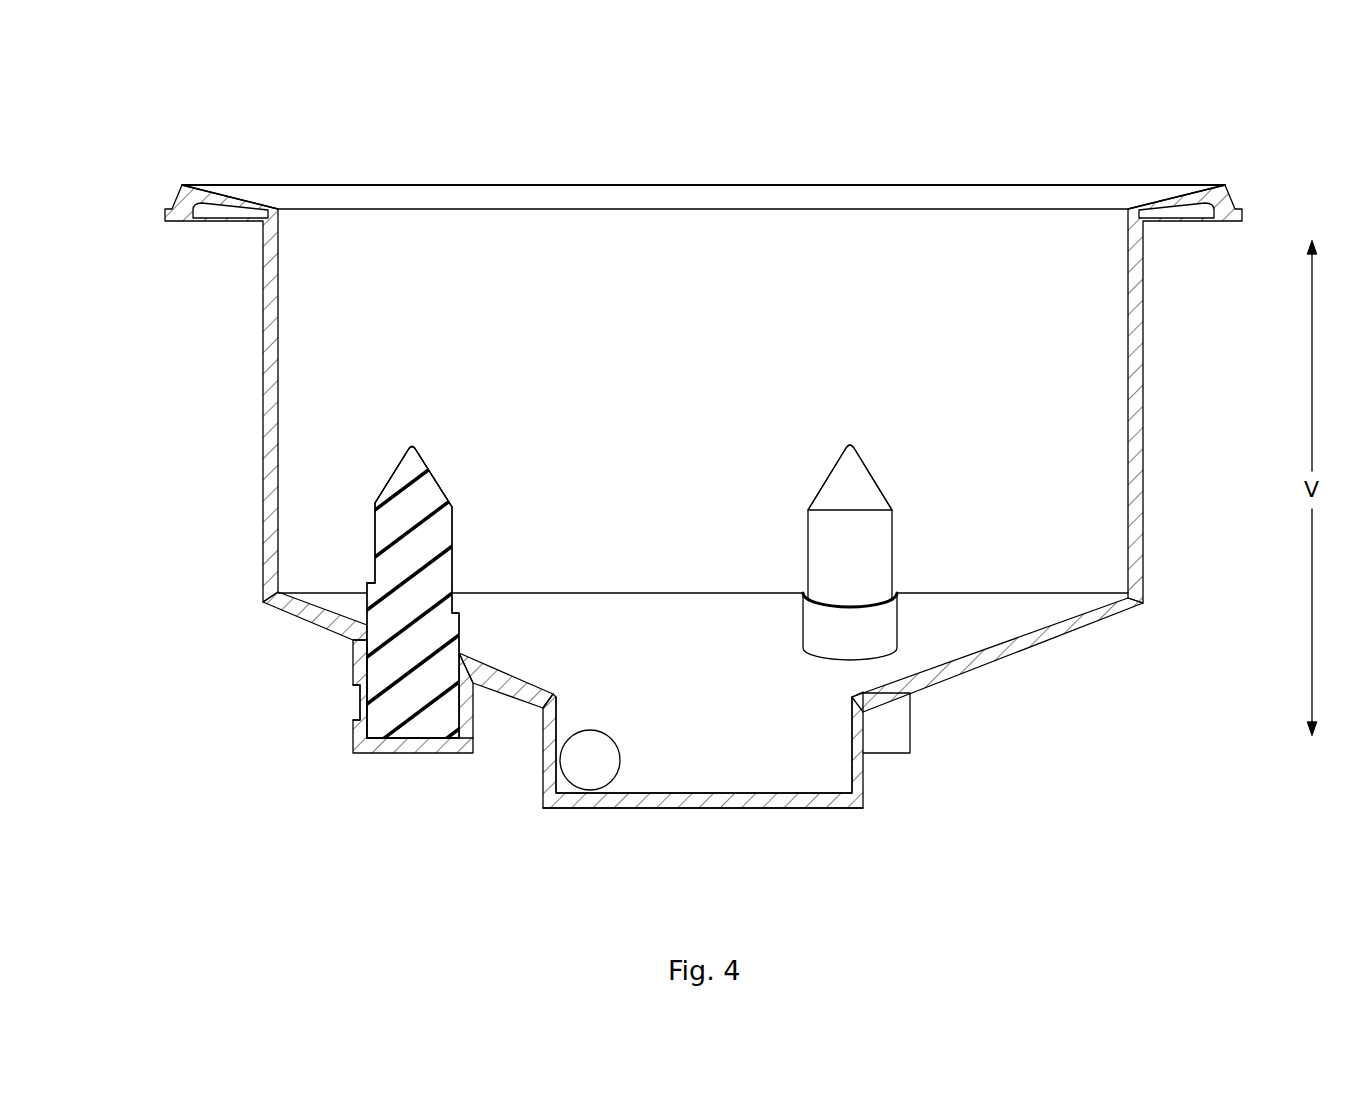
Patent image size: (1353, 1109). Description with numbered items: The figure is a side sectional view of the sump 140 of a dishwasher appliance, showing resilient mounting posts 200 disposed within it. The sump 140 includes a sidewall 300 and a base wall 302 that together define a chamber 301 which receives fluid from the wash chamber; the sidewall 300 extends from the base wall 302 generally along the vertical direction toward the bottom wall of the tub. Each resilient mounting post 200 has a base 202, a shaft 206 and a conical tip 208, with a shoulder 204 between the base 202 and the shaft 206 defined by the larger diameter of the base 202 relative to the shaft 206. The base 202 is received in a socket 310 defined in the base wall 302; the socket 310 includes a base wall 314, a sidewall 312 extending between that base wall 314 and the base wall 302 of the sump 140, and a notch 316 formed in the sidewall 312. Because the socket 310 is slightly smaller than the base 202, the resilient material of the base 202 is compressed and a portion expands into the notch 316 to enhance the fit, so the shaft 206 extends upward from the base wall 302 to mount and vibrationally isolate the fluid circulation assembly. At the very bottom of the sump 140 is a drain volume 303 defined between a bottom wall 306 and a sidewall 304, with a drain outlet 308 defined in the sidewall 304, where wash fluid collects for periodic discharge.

The sump 140 is at (183, 140).
The resilient mounting post 200 is at (436, 430).
The base 202 is at (405, 715).
The shoulder 204 is at (372, 590).
The shaft 206 is at (440, 548).
The conical tip 208 is at (407, 481).
The sidewall 300 is at (272, 430).
The chamber 301 is at (302, 307).
The base wall 302 is at (305, 610).
The drain volume 303 is at (728, 766).
The sidewall 304 is at (860, 760).
The bottom wall 306 is at (842, 805).
The drain outlet 308 is at (618, 748).
The socket 310 is at (888, 723).
The sidewall 312 is at (470, 715).
The base wall 314 is at (420, 745).
The notch 316 is at (358, 710).